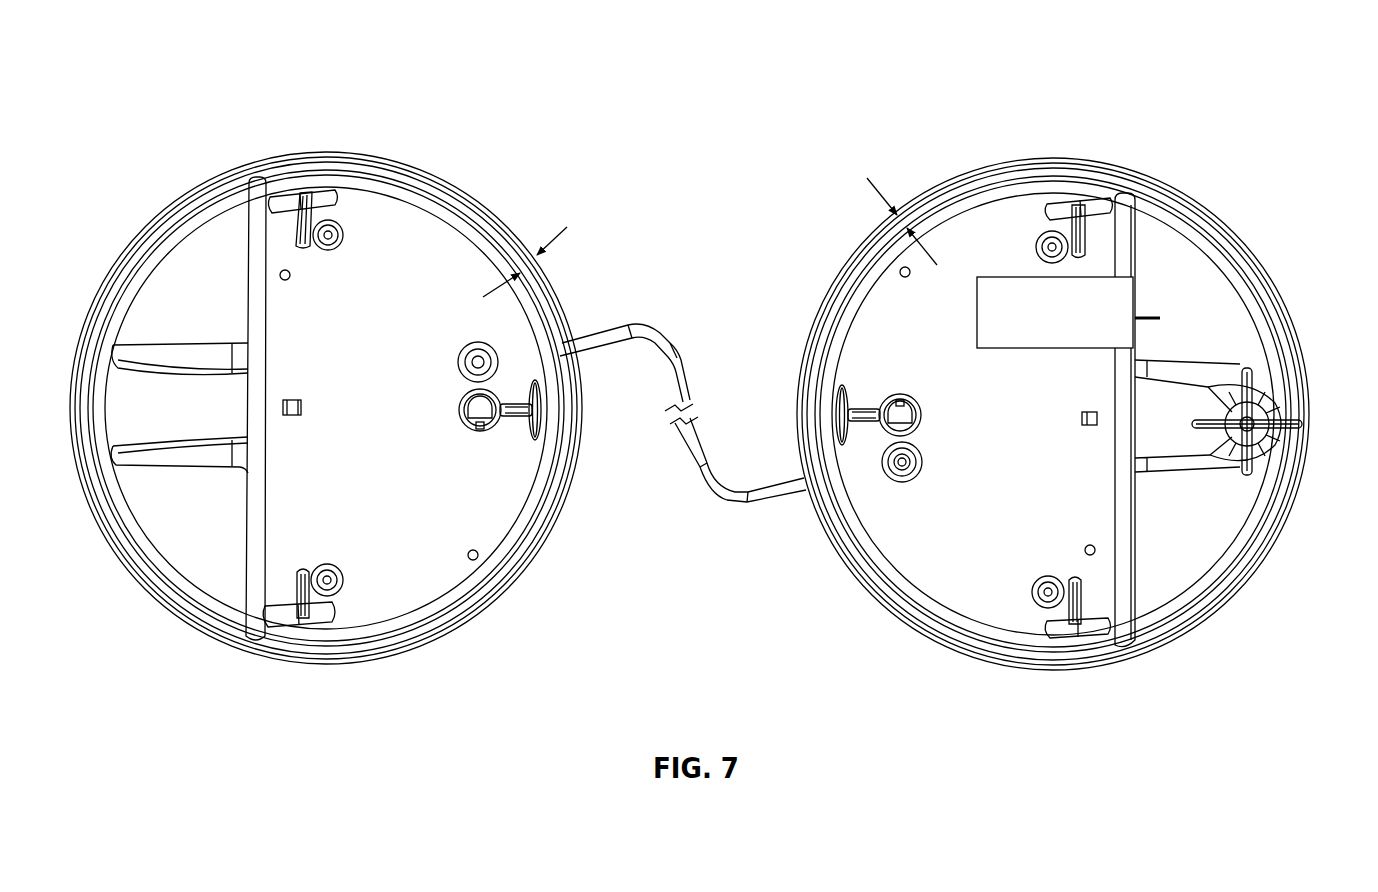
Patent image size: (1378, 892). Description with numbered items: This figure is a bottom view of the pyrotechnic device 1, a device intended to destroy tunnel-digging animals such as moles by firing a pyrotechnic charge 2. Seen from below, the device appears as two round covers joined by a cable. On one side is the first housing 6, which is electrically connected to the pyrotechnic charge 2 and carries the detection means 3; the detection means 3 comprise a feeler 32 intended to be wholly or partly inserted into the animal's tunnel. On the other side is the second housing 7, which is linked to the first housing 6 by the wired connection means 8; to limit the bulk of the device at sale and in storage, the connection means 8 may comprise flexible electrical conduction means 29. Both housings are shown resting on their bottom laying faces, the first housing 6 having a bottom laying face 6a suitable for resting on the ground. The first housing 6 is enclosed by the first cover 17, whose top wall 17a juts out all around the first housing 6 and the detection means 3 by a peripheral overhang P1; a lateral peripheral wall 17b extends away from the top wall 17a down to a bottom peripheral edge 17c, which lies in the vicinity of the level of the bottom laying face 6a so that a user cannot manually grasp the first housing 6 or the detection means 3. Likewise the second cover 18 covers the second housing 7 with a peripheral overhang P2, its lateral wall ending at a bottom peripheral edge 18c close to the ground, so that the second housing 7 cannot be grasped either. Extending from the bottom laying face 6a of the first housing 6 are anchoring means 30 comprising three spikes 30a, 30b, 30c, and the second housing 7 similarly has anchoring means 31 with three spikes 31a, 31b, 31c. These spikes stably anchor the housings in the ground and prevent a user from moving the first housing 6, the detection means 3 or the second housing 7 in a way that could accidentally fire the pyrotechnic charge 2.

The pyrotechnic device 1 is at (771, 110).
The pyrotechnic charge 2 is at (1068, 312).
The detection means 3 is at (1268, 404).
The first housing 6 is at (1118, 530).
The bottom laying face 6a is at (688, 413).
The second housing 7 is at (258, 520).
The wired connection means 8 is at (680, 447).
The first cover 17 is at (1057, 400).
The top wall 17a is at (675, 372).
The lateral peripheral wall 17b is at (183, 208).
The bottom peripheral edge 17c is at (1243, 253).
The second cover 18 is at (683, 376).
The bottom peripheral edge 18c is at (478, 198).
The flexible electrical conduction means 29 is at (668, 340).
The anchoring means 30 is at (1127, 644).
The spike 30a is at (836, 406).
The spike 30b is at (1063, 634).
The spike 30c is at (1083, 200).
The anchoring means 31 is at (351, 634).
The spike 31a is at (543, 418).
The spike 31b is at (318, 192).
The spike 31c is at (290, 628).
The feeler 32 is at (1252, 385).
The peripheral overhang P1 is at (891, 209).
The peripheral overhang P2 is at (540, 251).